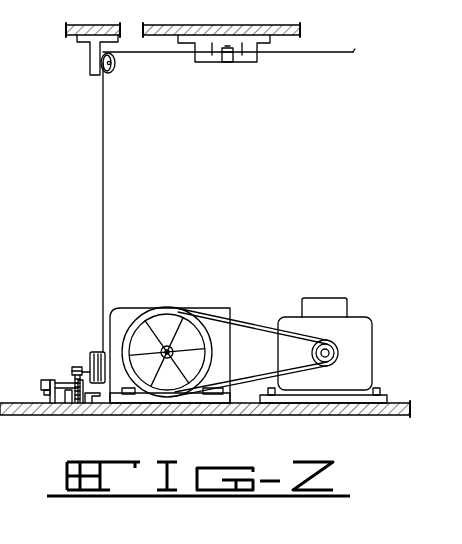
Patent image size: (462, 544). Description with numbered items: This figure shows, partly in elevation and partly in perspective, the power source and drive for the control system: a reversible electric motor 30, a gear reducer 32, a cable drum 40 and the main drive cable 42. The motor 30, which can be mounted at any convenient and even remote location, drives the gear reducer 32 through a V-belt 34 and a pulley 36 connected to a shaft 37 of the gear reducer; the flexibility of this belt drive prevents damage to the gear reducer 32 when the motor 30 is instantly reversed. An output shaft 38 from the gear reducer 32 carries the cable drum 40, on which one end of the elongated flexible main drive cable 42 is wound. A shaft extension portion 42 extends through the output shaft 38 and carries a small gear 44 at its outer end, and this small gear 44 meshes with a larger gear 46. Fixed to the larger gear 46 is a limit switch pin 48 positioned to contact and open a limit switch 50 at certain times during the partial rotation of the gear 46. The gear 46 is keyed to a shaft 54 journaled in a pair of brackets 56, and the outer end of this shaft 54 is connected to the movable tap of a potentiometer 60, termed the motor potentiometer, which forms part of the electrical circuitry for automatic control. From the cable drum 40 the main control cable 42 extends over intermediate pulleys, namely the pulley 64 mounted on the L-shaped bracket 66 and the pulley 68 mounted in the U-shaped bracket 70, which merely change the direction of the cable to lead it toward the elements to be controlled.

The reversible electric motor 30 is at (328, 304).
The gear reducer 32 is at (212, 310).
The V-belt 34 is at (248, 323).
The pulley 36 is at (182, 308).
The shaft 37 is at (178, 350).
The output shaft 38 is at (110, 330).
The cable drum 40 is at (98, 355).
The main drive cable 42 is at (103, 172).
The small gear 44 is at (72, 371).
The larger gear 46 is at (68, 403).
The limit switch pin 48 is at (75, 378).
The limit switch 50 is at (62, 403).
The shaft 54 is at (41, 381).
The brackets 56 is at (98, 398).
The potentiometer 60 is at (44, 392).
The pulley 64 is at (115, 68).
The L-shaped bracket 66 is at (90, 50).
The pulley 68 is at (226, 62).
The U-shaped bracket 70 is at (250, 59).